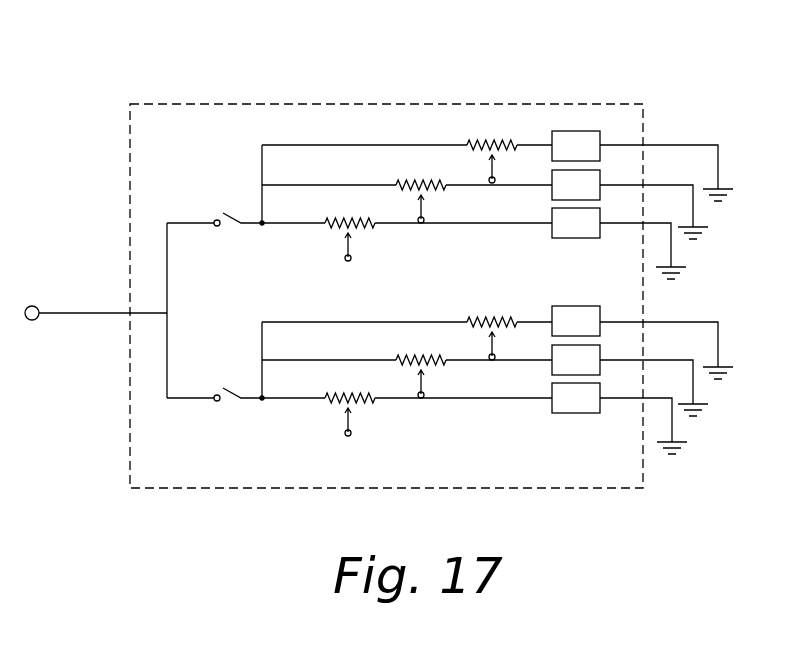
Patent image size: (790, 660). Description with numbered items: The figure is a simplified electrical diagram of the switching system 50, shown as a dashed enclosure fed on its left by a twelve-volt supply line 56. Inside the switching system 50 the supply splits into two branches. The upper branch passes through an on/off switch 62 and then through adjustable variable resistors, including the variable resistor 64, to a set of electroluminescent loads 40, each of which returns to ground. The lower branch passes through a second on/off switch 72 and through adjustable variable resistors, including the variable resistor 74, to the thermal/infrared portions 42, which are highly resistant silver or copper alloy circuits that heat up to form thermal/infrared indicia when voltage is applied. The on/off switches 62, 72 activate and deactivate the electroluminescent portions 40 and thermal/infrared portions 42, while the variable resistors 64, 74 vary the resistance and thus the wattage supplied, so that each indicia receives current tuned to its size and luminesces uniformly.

The switching system 50 is at (543, 103).
The 12V power supply line 56 is at (92, 313).
The on/off switch 62 is at (237, 218).
The adjustable variable resistor 64 is at (358, 228).
The first light sources 40 is at (588, 131).
The on/off switch 72 is at (226, 403).
The adjustable variable resistor 74 is at (355, 403).
The thermal/infrared portion 42 is at (575, 306).